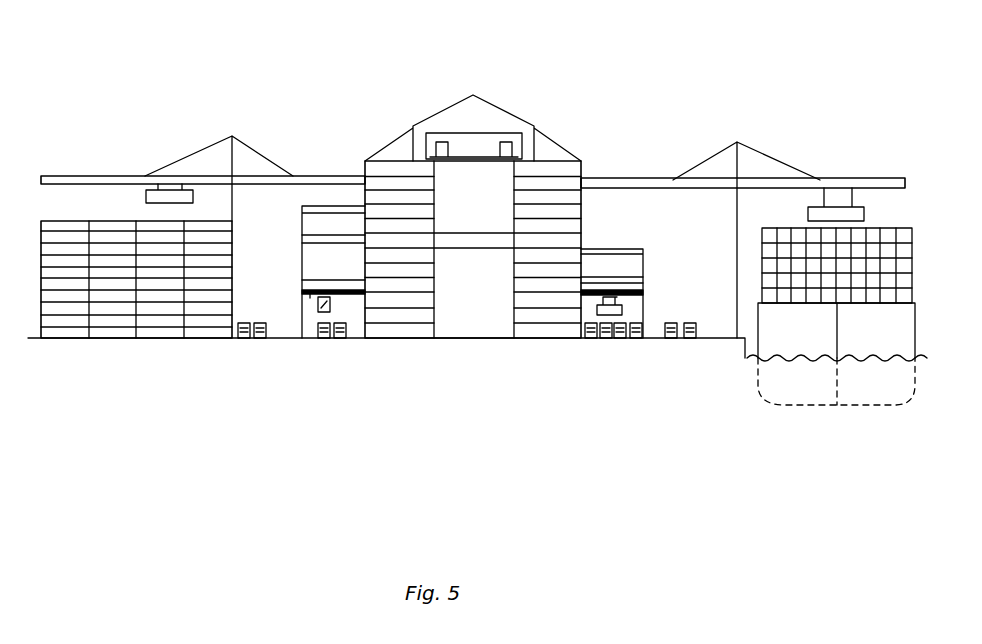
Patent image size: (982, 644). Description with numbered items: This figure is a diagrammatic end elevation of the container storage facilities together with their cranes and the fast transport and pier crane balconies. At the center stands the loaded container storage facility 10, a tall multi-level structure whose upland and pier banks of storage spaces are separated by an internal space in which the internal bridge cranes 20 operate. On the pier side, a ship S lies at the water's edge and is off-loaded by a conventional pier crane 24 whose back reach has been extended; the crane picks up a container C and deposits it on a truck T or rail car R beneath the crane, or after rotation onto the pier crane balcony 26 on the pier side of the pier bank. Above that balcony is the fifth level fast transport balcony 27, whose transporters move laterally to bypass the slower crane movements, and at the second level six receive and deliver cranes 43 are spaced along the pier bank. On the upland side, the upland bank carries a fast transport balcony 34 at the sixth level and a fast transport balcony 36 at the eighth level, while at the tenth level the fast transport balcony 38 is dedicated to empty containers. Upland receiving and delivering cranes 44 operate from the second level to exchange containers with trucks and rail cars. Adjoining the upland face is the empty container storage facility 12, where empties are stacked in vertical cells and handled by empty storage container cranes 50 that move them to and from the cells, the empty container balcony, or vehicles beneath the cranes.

The loaded container storage facility 10 is at (545, 95).
The empty container storage facility 12 is at (117, 218).
The internal bridge cranes 20 is at (473, 242).
The pier cranes 24 is at (655, 185).
The pier crane balcony 26 is at (610, 253).
The fast transport balcony 27 is at (627, 280).
The fast transport balcony 34 is at (362, 290).
The fast transport balcony 36 is at (323, 238).
The fast transport balcony 38 is at (332, 208).
The receive and deliver cranes 43 is at (627, 297).
The upland receiving and delivering cranes 44 is at (313, 297).
The empty storage container cranes 50 is at (90, 178).
The container C is at (325, 312).
The truck T is at (248, 340).
The rail car R is at (688, 340).
The ship S is at (887, 338).